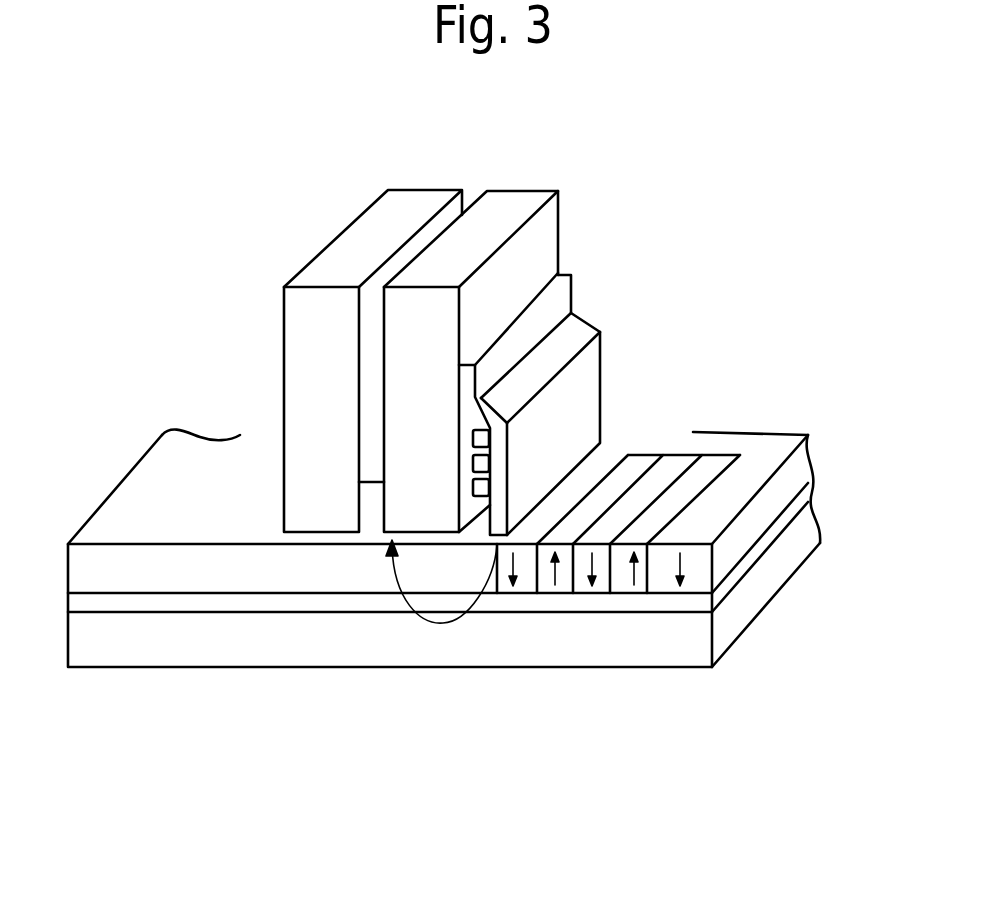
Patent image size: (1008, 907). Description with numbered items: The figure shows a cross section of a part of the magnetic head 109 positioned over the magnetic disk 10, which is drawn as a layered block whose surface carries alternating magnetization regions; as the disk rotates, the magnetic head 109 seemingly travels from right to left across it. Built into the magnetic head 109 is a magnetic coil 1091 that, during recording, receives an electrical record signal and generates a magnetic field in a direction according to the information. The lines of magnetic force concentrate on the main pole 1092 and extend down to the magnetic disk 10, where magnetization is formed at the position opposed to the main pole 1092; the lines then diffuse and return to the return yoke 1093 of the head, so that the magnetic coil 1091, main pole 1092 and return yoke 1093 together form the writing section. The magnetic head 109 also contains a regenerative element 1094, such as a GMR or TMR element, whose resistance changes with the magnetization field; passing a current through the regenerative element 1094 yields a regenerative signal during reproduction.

The magnetic disk 10 is at (767, 435).
The magnetic head 109 is at (437, 315).
The magnetic coil 1091 is at (485, 463).
The main pole 1092 is at (573, 392).
The return yoke 1093 is at (503, 210).
The regenerative element 1094 is at (372, 507).